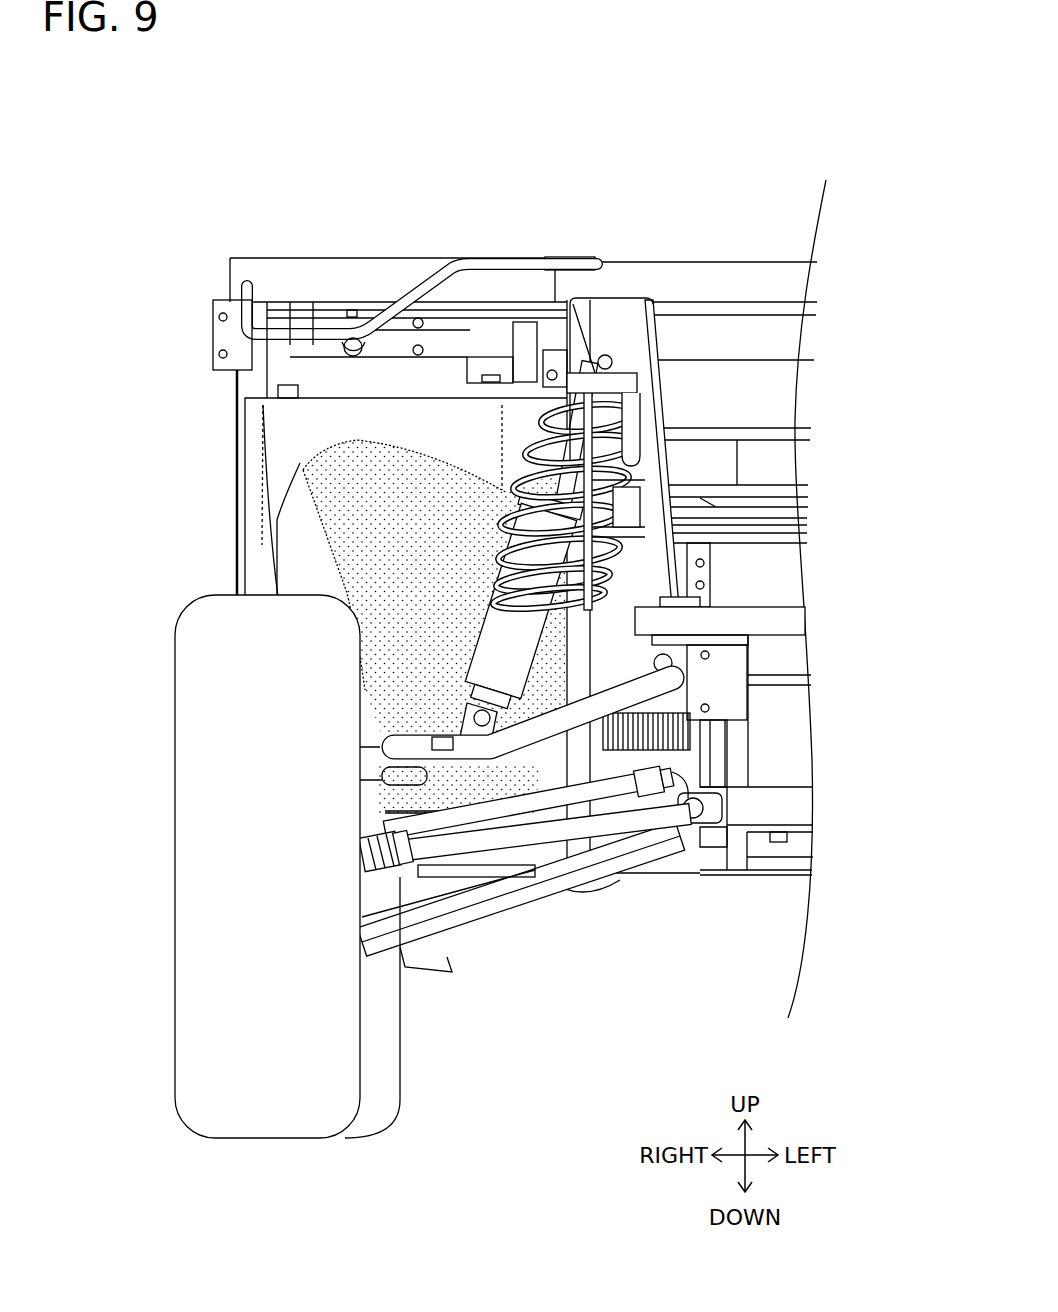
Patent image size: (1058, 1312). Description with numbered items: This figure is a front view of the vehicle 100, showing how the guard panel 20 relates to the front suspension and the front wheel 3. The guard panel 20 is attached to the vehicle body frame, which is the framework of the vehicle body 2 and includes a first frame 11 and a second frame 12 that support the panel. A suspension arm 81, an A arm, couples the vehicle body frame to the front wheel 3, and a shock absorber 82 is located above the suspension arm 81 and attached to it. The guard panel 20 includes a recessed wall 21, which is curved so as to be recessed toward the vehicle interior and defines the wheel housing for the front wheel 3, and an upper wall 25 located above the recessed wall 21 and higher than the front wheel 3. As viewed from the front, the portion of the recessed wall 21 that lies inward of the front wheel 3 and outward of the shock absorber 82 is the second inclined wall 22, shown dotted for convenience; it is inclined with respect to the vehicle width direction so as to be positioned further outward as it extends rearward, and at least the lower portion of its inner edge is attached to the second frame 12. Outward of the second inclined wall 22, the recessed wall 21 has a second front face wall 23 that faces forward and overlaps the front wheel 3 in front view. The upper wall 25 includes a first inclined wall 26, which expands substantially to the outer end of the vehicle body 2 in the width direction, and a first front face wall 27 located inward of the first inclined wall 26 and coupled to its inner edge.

The vehicle 100 is at (652, 174).
The vehicle body 2 is at (268, 258).
The upper wall 25 is at (343, 395).
The guard panel 20 is at (243, 444).
The first frame 11 is at (237, 500).
The recessed wall 21 is at (275, 545).
The second front face wall 23 is at (321, 576).
The first inclined wall 26 is at (437, 446).
The first front face wall 27 is at (603, 454).
The second inclined wall 22 is at (435, 628).
The second frame 12 is at (590, 623).
The suspension arm 81 is at (528, 770).
The shock absorber 82 is at (488, 628).
The front wheel 3 is at (175, 862).